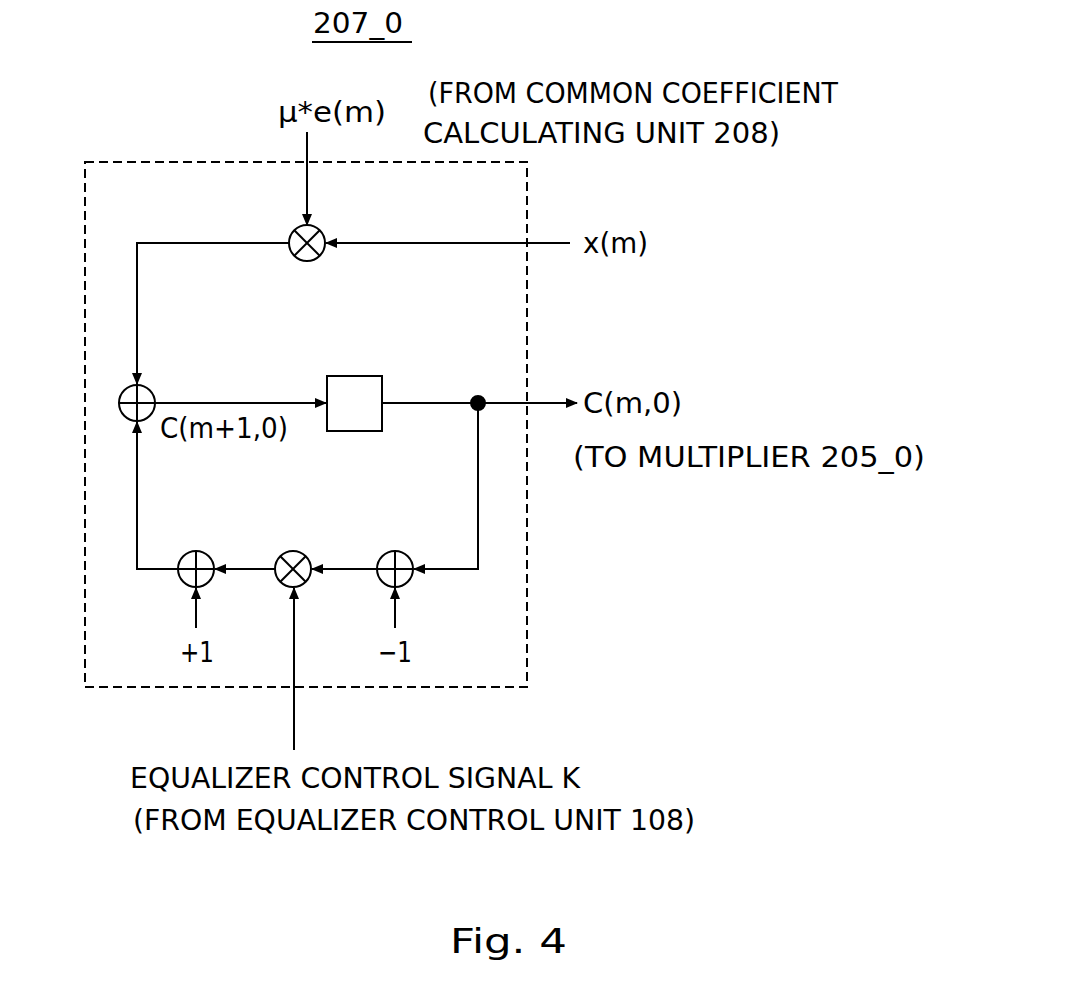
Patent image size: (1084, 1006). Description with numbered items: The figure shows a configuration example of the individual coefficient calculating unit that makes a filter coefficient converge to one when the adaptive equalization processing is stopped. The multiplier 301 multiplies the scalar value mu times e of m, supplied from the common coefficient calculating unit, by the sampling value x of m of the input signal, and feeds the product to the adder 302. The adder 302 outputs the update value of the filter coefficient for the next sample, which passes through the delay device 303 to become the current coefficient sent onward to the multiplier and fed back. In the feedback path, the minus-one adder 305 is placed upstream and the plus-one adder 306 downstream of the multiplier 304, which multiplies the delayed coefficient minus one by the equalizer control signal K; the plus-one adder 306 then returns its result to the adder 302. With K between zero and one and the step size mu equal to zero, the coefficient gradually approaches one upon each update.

The multiplier 301 is at (322, 232).
The adder 302 is at (150, 388).
The delay device 303 is at (356, 376).
The multiplier 304 is at (302, 551).
The −1 adder 305 is at (406, 551).
The +1 adder 306 is at (210, 551).